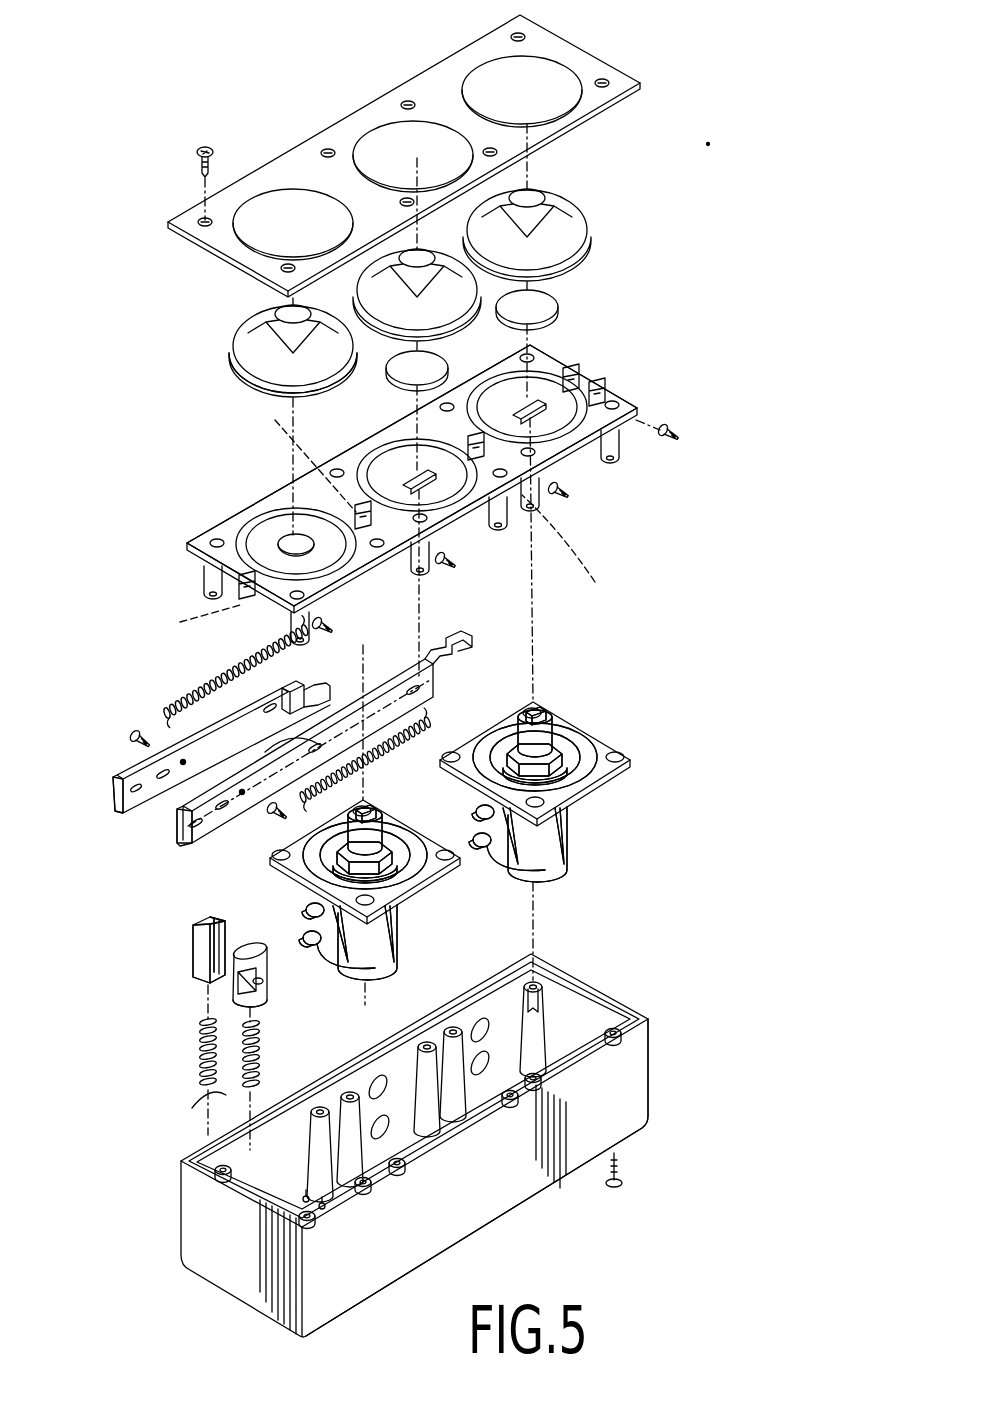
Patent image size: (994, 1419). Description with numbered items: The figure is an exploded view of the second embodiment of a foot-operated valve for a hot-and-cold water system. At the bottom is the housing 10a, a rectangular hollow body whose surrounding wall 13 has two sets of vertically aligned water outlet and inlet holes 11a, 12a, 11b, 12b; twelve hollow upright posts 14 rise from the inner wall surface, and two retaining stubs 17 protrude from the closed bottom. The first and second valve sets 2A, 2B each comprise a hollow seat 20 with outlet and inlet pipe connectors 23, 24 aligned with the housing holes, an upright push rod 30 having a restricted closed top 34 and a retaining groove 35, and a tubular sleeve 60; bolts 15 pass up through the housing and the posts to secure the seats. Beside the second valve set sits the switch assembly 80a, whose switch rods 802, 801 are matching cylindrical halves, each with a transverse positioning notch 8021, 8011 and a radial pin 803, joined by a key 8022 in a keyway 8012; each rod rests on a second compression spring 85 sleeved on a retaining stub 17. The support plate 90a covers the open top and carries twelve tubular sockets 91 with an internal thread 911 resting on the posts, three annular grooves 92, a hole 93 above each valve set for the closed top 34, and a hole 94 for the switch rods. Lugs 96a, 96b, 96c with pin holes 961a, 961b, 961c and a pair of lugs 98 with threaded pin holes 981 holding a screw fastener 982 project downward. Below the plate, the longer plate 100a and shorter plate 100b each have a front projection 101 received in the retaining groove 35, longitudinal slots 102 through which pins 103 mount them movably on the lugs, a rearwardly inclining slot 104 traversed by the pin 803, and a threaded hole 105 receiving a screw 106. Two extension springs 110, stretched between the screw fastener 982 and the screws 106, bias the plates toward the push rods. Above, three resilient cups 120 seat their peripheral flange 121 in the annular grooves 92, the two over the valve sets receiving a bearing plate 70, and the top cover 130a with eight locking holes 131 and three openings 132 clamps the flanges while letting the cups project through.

The top cover 130a is at (193, 247).
The locking holes 131 is at (514, 35).
The openings 132 is at (268, 198).
The resilient cups 120 is at (382, 262).
The peripheral flange 121 is at (236, 368).
The bearing plates 70 is at (563, 292).
The support plate 90a is at (184, 544).
The tubular sockets 91 is at (622, 448).
The internal thread 911 is at (630, 410).
The annular grooves 92 is at (548, 382).
The hole 93 is at (540, 408).
The hole 94 is at (289, 542).
The lug 96a is at (238, 589).
The lug 96b is at (353, 522).
The lug 96c is at (492, 458).
The pin hole 961a is at (180, 621).
The pin hole 961b is at (285, 452).
The pin hole 961c is at (586, 546).
The lugs 98 is at (597, 386).
The pin holes 981 is at (607, 393).
The screw fastener 982 is at (665, 438).
The pins 103 is at (568, 498).
The longer plate 100a is at (174, 827).
The shorter plate 100b is at (114, 787).
The projection 101 is at (306, 699).
The longitudinally extending slots 102 is at (269, 704).
The rearwardly inclining slot 104 is at (117, 798).
The threaded hole 105 is at (182, 760).
The screw 106 is at (133, 731).
The extension springs 110 is at (169, 709).
The first valve set 2A is at (623, 855).
The second valve set 2B is at (472, 906).
The push rod 30 is at (386, 807).
The closed top 34 is at (383, 830).
The retaining groove 35 is at (380, 870).
The tubular sleeve 60 is at (390, 883).
The hollow seat 20 is at (349, 985).
The outlet pipe connector 23 is at (506, 745).
The inlet pipe connector 24 is at (478, 844).
The switch assembly 80a is at (190, 924).
The switch rod 801 is at (198, 975).
The positioning notch 8011 is at (196, 950).
The keyway 8012 is at (198, 926).
The switch rod 802 is at (236, 990).
The positioning notch 8021 is at (258, 968).
The key 8022 is at (252, 1048).
The radial pin 803 is at (250, 1000).
The second compression spring 85 is at (250, 1092).
The housing 10a is at (181, 1196).
The surrounding wall 13 is at (628, 1087).
The water outlet hole 11a is at (477, 1022).
The water outlet hole 11b is at (390, 1096).
The water inlet hole 12a is at (475, 1054).
The water inlet hole 12b is at (391, 1133).
The upright posts 14 is at (612, 1029).
The bolts 15 is at (607, 1166).
The retaining stubs 17 is at (324, 1208).